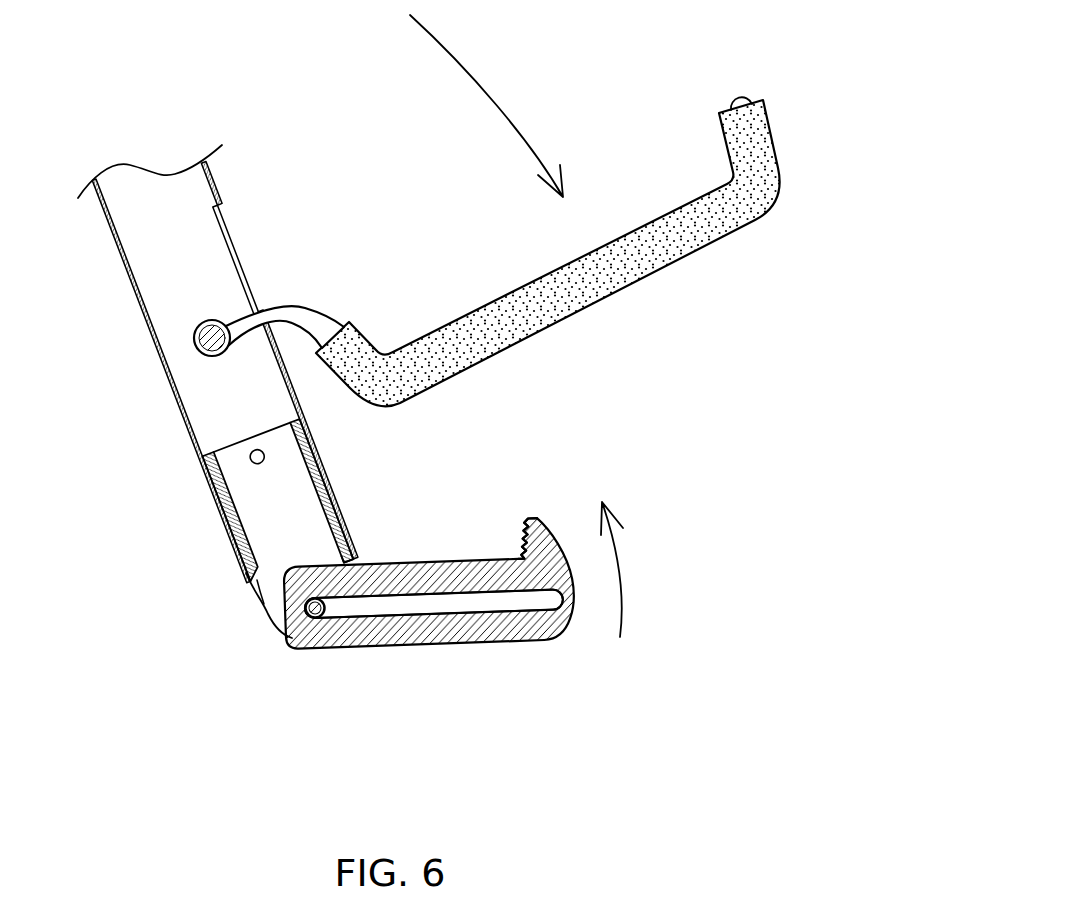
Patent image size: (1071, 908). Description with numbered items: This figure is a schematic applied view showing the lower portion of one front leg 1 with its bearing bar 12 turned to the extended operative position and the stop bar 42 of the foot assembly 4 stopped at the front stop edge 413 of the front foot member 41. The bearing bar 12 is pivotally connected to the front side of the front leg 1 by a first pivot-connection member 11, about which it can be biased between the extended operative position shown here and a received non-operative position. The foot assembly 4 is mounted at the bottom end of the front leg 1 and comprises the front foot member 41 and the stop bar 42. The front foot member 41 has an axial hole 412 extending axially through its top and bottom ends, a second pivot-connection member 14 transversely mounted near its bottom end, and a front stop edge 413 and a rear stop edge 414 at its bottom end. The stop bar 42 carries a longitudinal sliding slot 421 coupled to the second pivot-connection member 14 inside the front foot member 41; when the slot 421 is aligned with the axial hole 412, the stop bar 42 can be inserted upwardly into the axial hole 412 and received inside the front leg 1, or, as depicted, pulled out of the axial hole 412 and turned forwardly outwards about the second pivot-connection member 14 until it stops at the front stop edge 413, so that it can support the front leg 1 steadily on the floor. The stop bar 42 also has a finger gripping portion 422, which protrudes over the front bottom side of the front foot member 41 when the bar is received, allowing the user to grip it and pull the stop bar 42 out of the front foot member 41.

The front leg 1 is at (150, 338).
The first pivot-connection member 11 is at (208, 321).
The bearing bar 12 is at (450, 327).
The foot assembly 4 is at (349, 586).
The front foot member 41 is at (280, 549).
The axial hole 412 is at (238, 466).
The front stop edge 413 is at (352, 560).
The rear stop edge 414 is at (264, 603).
The stop bar 42 is at (429, 598).
The longitudinal sliding slot 421 is at (433, 608).
The finger gripping portion 422 is at (516, 538).
The second pivot-connection member 14 is at (322, 614).